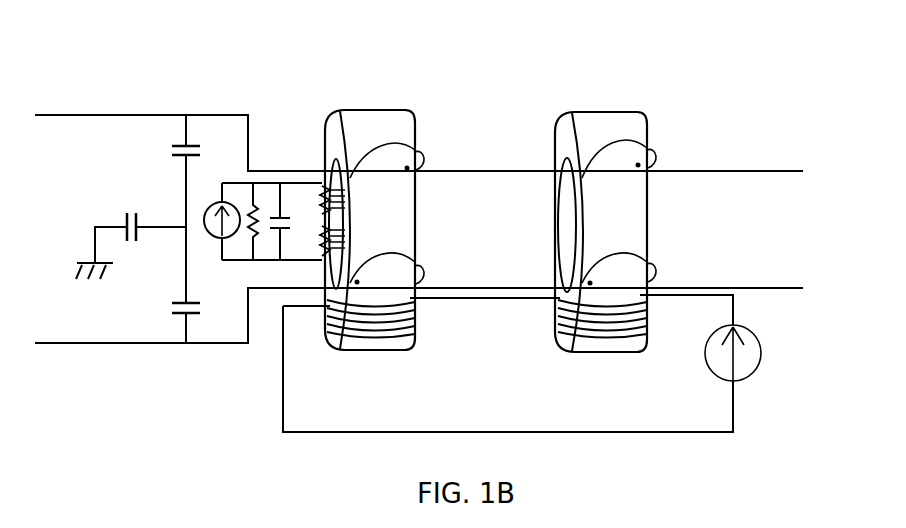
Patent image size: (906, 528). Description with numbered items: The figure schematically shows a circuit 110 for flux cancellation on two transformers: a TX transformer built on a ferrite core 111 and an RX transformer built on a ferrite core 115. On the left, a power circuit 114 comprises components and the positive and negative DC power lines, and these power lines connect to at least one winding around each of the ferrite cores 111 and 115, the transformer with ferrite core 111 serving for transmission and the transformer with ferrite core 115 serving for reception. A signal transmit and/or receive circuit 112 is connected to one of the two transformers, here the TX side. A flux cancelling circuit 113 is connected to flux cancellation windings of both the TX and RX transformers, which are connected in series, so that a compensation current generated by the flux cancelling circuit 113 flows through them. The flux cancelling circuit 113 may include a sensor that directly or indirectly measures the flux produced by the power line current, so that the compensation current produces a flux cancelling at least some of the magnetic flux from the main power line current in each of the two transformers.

The circuit for flux cancellation on two transformers 110 is at (176, 49).
The ferrite core 111 is at (357, 118).
The signal transmit and/or receive circuit 112 is at (259, 187).
The flux cancelling circuit 113 is at (323, 407).
The power circuit 114 is at (168, 258).
The ferrite core 115 is at (590, 115).